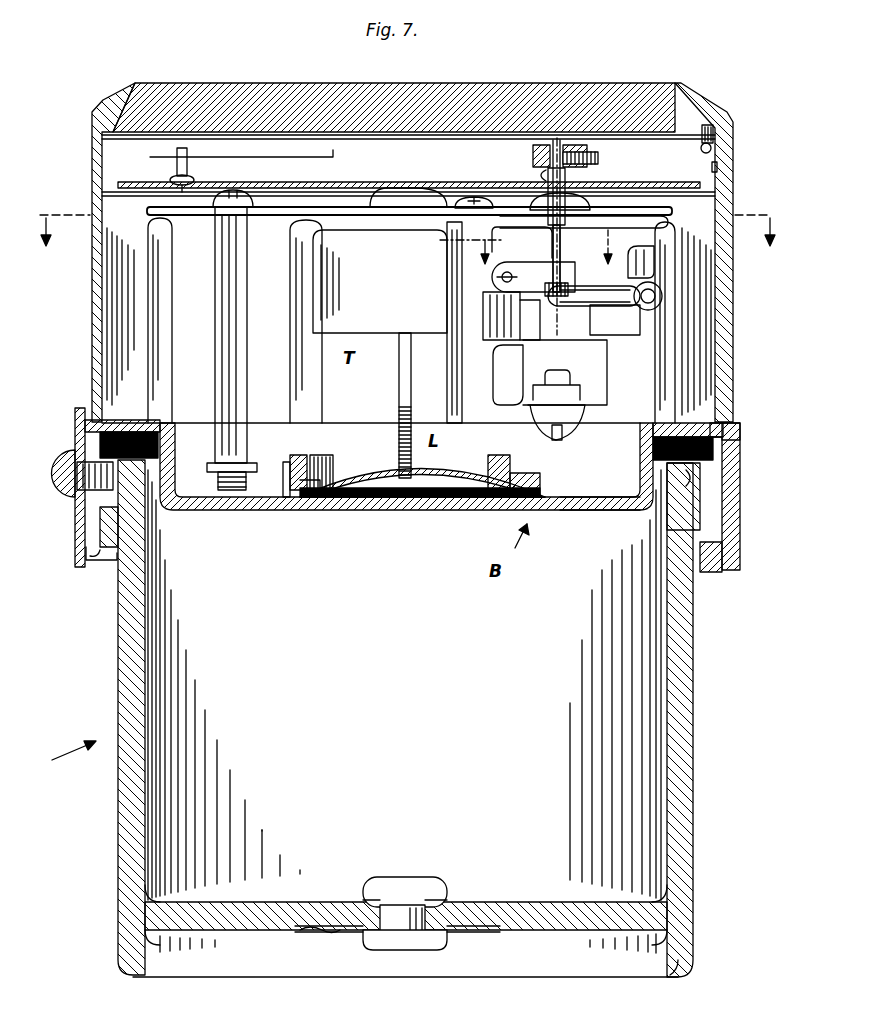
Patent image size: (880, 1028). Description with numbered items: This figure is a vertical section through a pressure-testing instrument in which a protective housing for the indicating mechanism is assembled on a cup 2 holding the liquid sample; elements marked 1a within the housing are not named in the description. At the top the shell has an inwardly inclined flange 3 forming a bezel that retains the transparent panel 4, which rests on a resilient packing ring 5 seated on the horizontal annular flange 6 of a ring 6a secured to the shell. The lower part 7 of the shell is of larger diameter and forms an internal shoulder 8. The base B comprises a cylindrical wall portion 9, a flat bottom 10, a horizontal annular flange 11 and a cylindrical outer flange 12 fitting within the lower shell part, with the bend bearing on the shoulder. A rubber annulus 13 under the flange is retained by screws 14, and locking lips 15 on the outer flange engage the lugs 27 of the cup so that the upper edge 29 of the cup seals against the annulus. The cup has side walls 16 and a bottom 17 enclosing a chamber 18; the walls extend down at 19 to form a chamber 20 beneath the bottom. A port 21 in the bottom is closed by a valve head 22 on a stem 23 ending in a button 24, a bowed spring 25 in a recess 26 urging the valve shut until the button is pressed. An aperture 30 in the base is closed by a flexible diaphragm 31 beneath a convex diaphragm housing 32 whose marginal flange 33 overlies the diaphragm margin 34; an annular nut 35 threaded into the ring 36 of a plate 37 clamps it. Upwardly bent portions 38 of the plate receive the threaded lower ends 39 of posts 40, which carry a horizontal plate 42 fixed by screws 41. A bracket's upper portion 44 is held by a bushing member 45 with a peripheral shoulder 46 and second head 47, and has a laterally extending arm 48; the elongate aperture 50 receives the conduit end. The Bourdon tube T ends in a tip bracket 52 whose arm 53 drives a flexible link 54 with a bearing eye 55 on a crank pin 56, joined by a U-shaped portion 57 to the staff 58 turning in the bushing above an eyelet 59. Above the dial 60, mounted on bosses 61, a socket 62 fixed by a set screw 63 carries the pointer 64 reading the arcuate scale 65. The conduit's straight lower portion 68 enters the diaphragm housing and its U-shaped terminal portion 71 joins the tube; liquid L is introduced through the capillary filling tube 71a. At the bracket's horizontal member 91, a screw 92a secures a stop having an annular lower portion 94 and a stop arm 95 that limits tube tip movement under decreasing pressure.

The rib 1a is at (150, 246).
The cup 2 is at (89, 717).
The inwardly inclined flange 3 is at (706, 105).
The transparent panel 4 is at (618, 93).
The resilient packing ring 5 is at (712, 143).
The horizontal annular flange 6 is at (716, 148).
The ring 6a is at (719, 170).
The lower part of the shell 7 is at (740, 462).
The internal shoulder 8 is at (730, 432).
The cylindrical wall portion 9 is at (640, 430).
The flat bottom 10 is at (615, 506).
The horizontal annular flange 11 is at (700, 427).
The cylindrical outer flange 12 is at (728, 525).
The annulus 13 is at (705, 472).
The screws 14 is at (73, 446).
The locking lips 15 is at (105, 558).
The side walls 16 is at (692, 648).
The bottom 17 is at (540, 905).
The chamber 18 is at (600, 760).
The downward extension of the side walls 19 is at (682, 968).
The chamber 20 is at (560, 980).
The port 21 is at (364, 896).
The valve head 22 is at (436, 886).
The stem 23 is at (394, 900).
The button 24 is at (436, 948).
The bowed spring 25 is at (345, 932).
The recess 26 is at (310, 931).
The lugs 27 is at (110, 526).
The upper edge of the cup 29 is at (692, 478).
The aperture 30 is at (470, 508).
The flexible diaphragm 31 is at (380, 500).
The diaphragm housing 32 is at (360, 462).
The marginal flange 33 is at (321, 455).
The margin of the diaphragm 34 is at (305, 505).
The annular nut 35 is at (300, 455).
The internally threaded cylindrical ring 36 is at (286, 465).
The plate 37 is at (551, 470).
The upwardly bent portions 38 is at (248, 478).
The screw-threaded lower end 39 is at (225, 485).
The vertical post 40 is at (214, 326).
The screws 41 is at (240, 190).
The horizontal plate 42 is at (280, 216).
The upper horizontal portion 44 is at (587, 224).
The bushing member 45 is at (562, 280).
The peripheral shoulder 46 is at (548, 236).
The second head 47 is at (590, 200).
The laterally extending arm 48 is at (600, 362).
The vertically elongate aperture 50 is at (630, 320).
The tip bracket 52 is at (455, 313).
The arm 53 is at (524, 274).
The flexible link 54 is at (528, 318).
The bearing eye 55 is at (575, 274).
The crank pin 56 is at (588, 310).
The U-shaped horizontal portion 57 is at (560, 320).
The staff 58 is at (540, 173).
The eyelet 59 is at (567, 182).
The dial 60 is at (365, 182).
The bosses 61 is at (420, 198).
The socket 62 is at (548, 148).
The set screw 63 is at (590, 147).
The pointer 64 is at (333, 158).
The arcuate scale 65 is at (190, 170).
The straight lower portion 68 is at (400, 392).
The U-shaped terminal portion 71 is at (662, 298).
The capillary filling tube 71a is at (648, 256).
The horizontal member 91 is at (588, 398).
The screw 92a is at (565, 432).
The annular lower portion 94 is at (540, 430).
The stop arm 95 is at (525, 381).